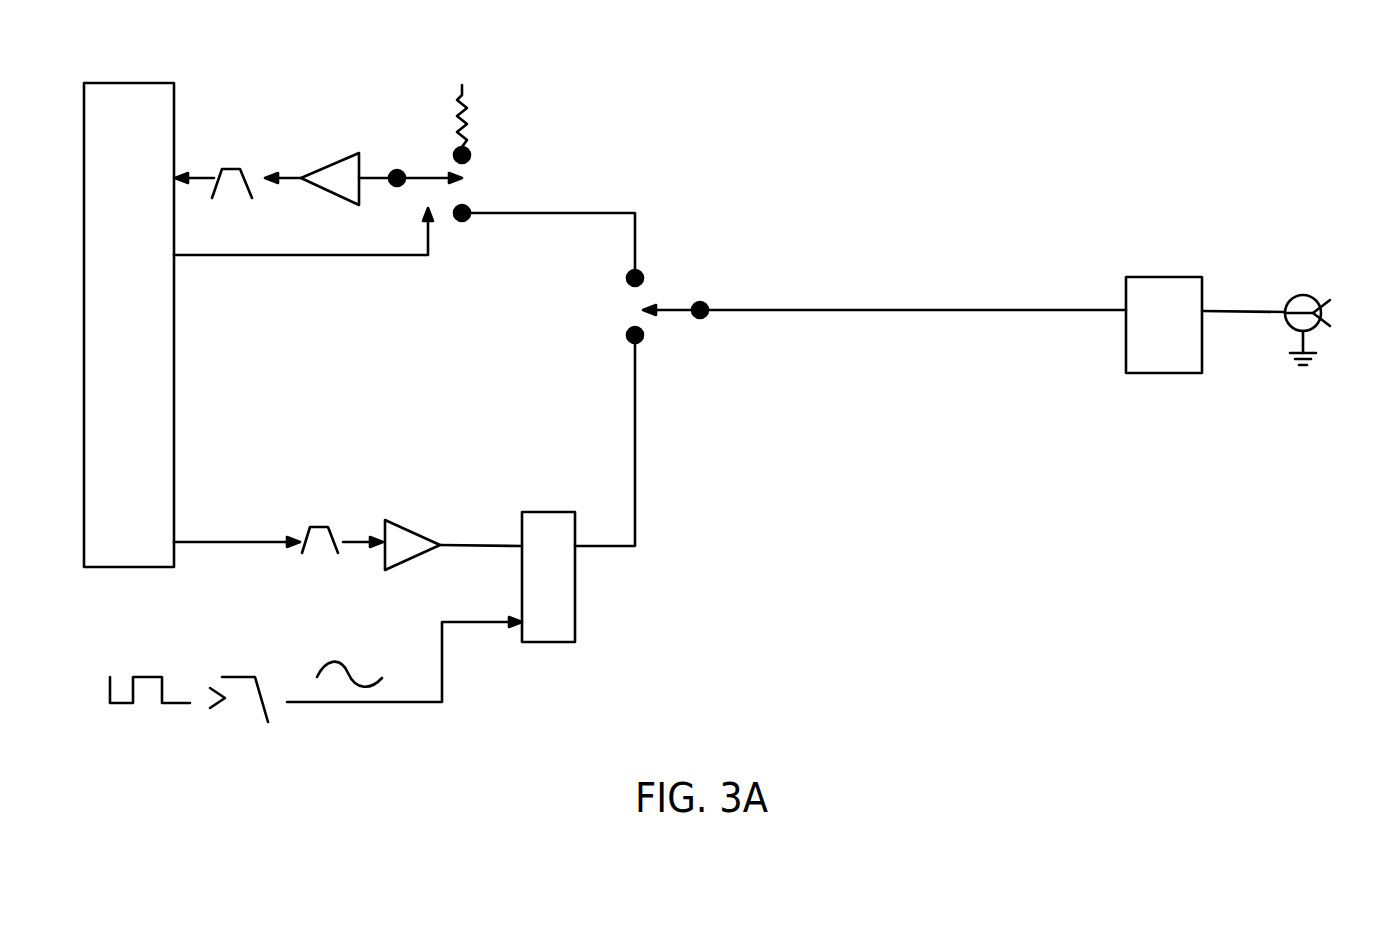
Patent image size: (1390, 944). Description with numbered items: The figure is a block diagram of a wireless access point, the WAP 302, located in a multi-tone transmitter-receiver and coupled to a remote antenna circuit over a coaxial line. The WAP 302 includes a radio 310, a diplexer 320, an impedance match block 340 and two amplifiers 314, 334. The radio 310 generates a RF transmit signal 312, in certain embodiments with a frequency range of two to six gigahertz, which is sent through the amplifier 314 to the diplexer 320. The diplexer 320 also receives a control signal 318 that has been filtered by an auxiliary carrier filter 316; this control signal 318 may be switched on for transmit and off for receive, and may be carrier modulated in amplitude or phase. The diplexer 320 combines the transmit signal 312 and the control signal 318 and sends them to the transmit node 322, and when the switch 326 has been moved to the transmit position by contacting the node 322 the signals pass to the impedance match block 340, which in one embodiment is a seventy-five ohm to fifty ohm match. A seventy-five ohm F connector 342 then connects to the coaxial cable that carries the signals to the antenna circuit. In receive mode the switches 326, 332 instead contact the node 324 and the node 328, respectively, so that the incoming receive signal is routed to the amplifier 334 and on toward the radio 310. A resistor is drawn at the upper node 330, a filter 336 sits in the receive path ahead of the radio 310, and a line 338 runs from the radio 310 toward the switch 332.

The WAP 302 is at (878, 103).
The radio 310 is at (154, 245).
The RF transmit signal 312 is at (233, 544).
The amplifier 314 is at (420, 554).
The auxiliary carrier filter 316 is at (437, 751).
The control signal 318 is at (472, 624).
The diplexer 320 is at (568, 580).
The transmit node 322 is at (640, 343).
The node 324 is at (642, 276).
The switch 326 is at (672, 305).
The node 328 is at (464, 221).
The node with load resistor 330 is at (470, 153).
The switch 332 is at (408, 178).
The amplifier 334 is at (356, 188).
The receive filter 336 is at (279, 180).
The control line 338 is at (328, 258).
The impedance match block 340 is at (1181, 323).
The 75 ohm F connector 342 is at (1317, 335).